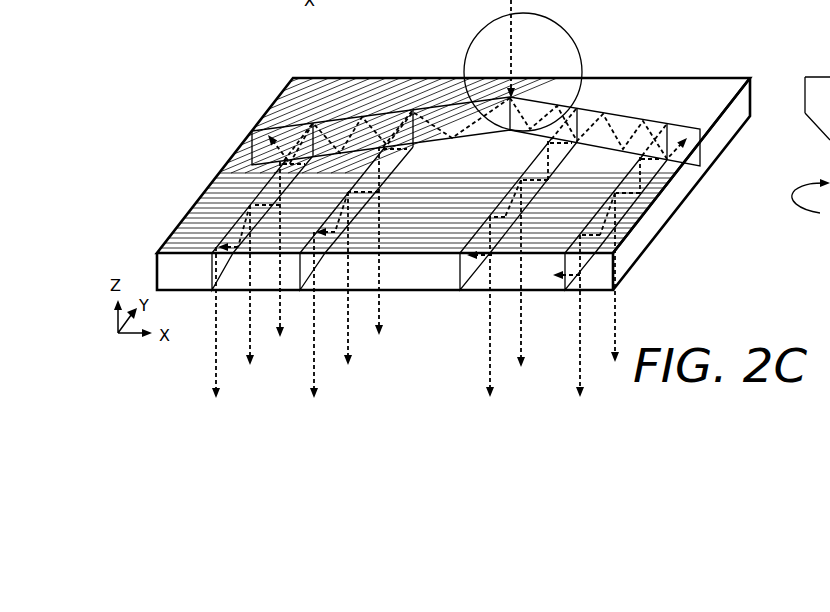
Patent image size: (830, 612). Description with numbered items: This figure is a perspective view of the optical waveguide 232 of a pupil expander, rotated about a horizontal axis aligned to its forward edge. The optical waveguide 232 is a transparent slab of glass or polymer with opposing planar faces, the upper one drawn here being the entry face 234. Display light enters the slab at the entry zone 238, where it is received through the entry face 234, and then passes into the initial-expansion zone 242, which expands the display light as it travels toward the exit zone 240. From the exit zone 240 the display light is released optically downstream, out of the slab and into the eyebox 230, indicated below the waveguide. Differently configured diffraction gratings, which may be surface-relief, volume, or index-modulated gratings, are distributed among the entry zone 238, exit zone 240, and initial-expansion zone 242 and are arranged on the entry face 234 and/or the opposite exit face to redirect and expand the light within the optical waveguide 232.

The eyebox 230 is at (752, 426).
The optical waveguide 232 is at (768, 135).
The entry face 234 is at (332, 103).
The entry zone 238 is at (560, 62).
The exit zone 240 is at (710, 180).
The initial-expansion zone 242 is at (197, 77).